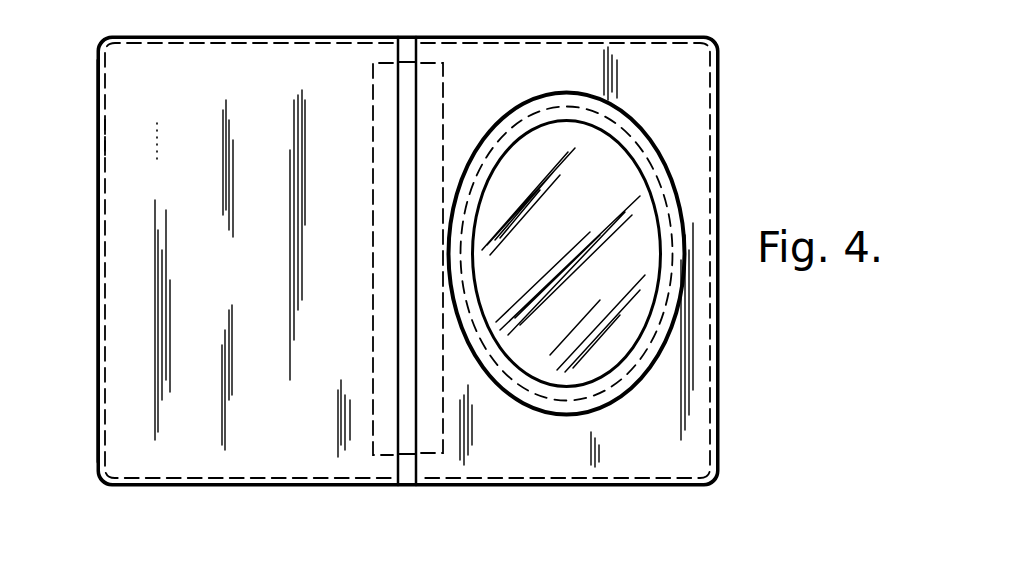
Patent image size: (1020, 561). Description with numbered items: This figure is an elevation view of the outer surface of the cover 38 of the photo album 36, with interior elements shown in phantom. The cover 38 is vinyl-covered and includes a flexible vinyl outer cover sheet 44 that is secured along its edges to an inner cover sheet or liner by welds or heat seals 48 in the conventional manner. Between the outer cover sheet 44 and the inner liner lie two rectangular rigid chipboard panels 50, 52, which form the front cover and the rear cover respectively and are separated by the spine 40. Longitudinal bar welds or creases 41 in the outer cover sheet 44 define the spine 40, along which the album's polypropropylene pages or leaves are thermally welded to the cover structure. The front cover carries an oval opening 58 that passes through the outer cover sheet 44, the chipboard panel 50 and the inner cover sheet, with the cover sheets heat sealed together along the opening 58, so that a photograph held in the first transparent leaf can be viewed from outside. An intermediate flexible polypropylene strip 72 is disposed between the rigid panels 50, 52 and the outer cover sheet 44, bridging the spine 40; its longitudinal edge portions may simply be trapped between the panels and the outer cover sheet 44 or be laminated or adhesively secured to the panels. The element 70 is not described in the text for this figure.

The photo album 36 is at (721, 315).
The cover 38 is at (113, 177).
The spine 40 is at (397, 487).
The longitudinal bar welds or creases 41 is at (398, 118).
The outer cover sheet 44 is at (302, 426).
The welds or heat seals 48 is at (578, 38).
The rigid panel 50 is at (710, 97).
The rigid panel 52 is at (107, 133).
The oval opening 58 is at (478, 285).
The pocket 70 is at (474, 558).
The polypropylene strip 72 is at (371, 175).